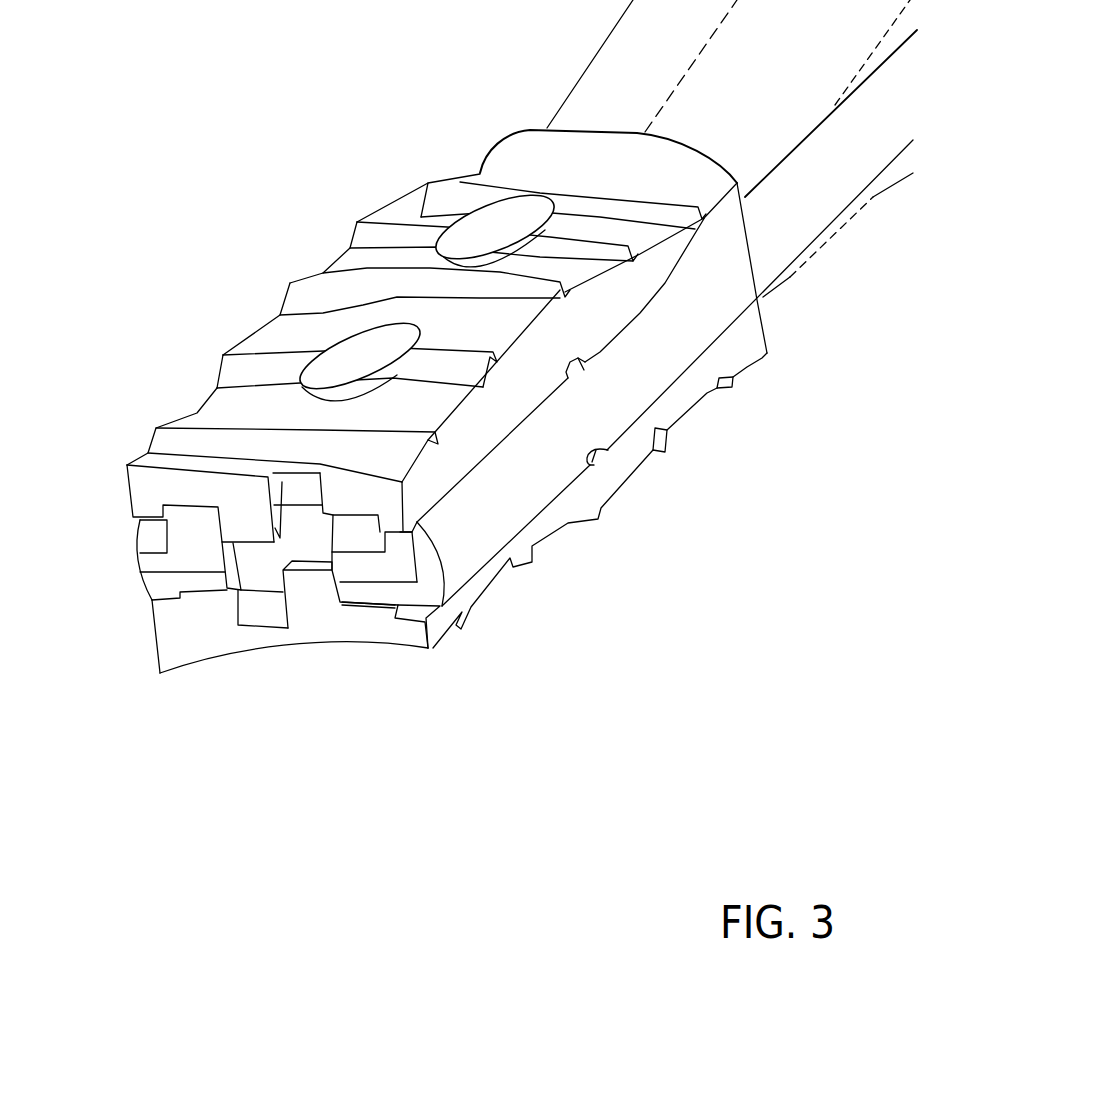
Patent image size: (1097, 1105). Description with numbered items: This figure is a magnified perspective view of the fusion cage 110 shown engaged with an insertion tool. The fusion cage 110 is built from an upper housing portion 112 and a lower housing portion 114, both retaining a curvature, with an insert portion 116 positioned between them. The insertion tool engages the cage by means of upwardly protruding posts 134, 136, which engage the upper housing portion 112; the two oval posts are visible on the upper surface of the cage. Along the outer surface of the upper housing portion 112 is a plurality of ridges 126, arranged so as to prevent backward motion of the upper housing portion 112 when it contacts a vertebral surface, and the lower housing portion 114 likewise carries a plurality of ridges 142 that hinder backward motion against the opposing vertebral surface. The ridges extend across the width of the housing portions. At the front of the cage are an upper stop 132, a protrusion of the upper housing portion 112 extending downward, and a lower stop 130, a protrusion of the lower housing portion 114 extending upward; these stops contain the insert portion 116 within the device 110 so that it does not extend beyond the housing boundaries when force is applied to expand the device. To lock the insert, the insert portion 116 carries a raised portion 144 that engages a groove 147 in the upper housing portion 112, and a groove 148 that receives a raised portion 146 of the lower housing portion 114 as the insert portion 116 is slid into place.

The fusion cage 110 is at (263, 166).
The upper housing portion 112 is at (223, 408).
The lower housing portion 114 is at (197, 637).
The insert portion 116 is at (468, 527).
The ridges 126 is at (367, 235).
The lower stop 130 is at (315, 593).
The upper stop 132 is at (253, 523).
The upwardly protruding post 134 is at (330, 358).
The upwardly protruding post 136 is at (480, 217).
The ridges 142 is at (600, 518).
The raised portion 144 is at (585, 369).
The raised portion 146 is at (594, 465).
The groove 147 is at (586, 357).
The groove 148 is at (598, 453).